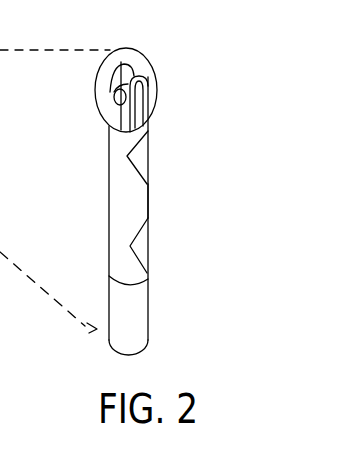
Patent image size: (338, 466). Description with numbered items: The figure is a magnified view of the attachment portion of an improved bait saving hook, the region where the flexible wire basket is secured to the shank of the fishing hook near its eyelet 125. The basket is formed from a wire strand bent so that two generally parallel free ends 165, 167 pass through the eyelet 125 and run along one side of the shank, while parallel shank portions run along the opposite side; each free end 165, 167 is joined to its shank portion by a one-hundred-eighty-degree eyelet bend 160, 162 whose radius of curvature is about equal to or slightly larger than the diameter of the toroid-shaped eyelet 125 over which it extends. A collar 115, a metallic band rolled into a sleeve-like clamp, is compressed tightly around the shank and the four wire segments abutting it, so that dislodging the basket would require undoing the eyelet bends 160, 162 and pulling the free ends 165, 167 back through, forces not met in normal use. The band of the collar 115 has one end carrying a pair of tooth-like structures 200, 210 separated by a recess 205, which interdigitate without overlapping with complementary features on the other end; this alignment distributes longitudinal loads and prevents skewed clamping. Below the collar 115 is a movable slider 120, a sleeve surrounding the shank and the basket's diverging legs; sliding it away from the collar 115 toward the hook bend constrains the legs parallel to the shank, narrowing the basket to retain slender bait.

The collar 115 is at (108, 200).
The movable slider 120 is at (117, 327).
The eyelet 125 is at (110, 65).
The eyelet bend 160 is at (122, 48).
The eyelet bend 162 is at (113, 93).
The free end 165 is at (143, 121).
The free end 167 is at (150, 85).
The tooth-like structure 200 is at (146, 148).
The recess 205 is at (147, 200).
The tooth-like structure 210 is at (140, 253).